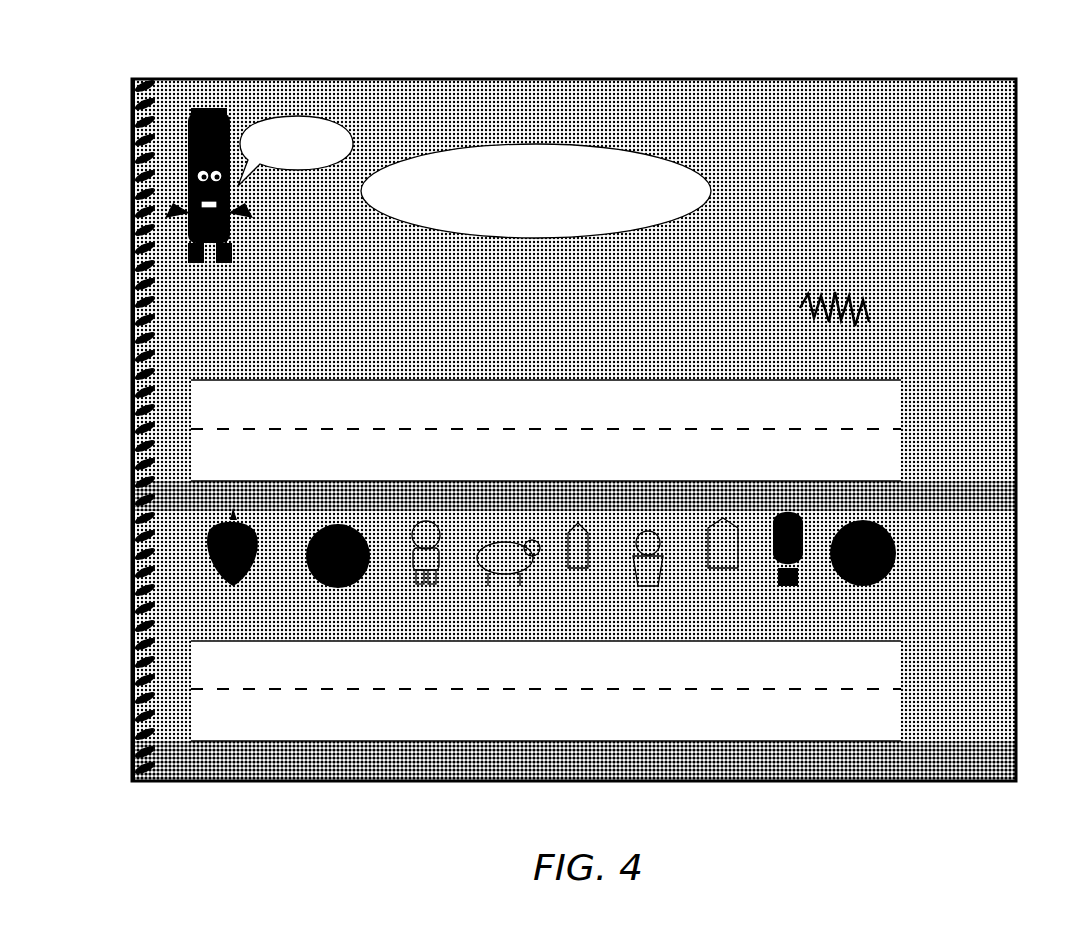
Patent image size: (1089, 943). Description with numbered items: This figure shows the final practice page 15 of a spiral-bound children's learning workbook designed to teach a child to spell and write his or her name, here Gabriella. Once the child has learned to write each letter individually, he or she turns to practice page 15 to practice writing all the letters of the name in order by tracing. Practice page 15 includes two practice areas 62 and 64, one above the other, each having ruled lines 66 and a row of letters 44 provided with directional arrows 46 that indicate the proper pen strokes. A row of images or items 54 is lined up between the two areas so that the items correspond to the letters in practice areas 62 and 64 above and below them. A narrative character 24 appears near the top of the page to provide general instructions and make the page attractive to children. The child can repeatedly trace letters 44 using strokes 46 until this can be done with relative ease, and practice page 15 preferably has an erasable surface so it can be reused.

The final practice page 15 is at (78, 103).
The narrative character 24 is at (183, 138).
The letters 44 is at (655, 410).
The directional arrows 46 is at (670, 405).
The images or items 54 is at (200, 541).
The first practice area 62 is at (425, 385).
The second practice area 64 is at (290, 735).
The ruled lines 66 is at (893, 415).